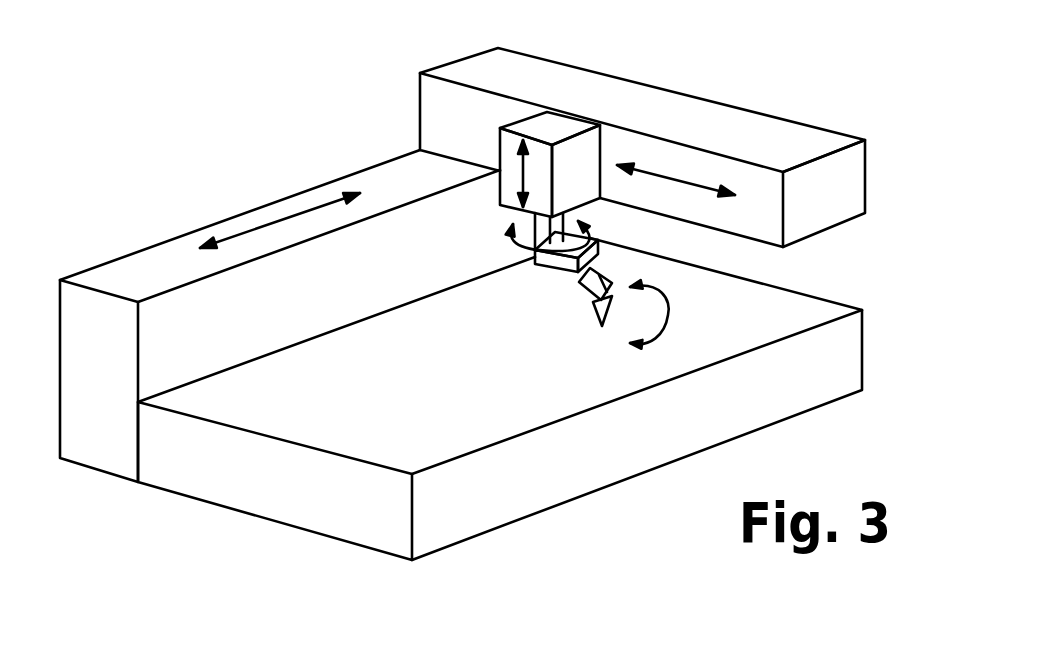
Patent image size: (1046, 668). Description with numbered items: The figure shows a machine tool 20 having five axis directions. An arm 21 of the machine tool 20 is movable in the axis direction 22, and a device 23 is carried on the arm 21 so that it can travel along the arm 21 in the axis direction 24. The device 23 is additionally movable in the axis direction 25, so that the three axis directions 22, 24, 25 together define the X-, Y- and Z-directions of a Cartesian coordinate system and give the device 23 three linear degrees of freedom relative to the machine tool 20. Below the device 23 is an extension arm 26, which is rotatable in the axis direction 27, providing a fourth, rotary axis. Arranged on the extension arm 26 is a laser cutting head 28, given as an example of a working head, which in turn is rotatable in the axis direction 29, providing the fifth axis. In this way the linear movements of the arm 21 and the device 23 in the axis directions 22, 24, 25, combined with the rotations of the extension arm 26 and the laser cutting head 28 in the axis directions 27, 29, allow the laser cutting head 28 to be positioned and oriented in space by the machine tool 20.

The machine tool 20 is at (265, 498).
The arm 21 is at (623, 100).
The axis direction 22 is at (282, 222).
The device 23 is at (512, 242).
The axis direction 24 is at (675, 177).
The axis direction 25 is at (500, 170).
The extension arm 26 is at (538, 262).
The axis direction 27 is at (557, 263).
The laser cutting head 28 is at (590, 302).
The axis direction 29 is at (667, 311).